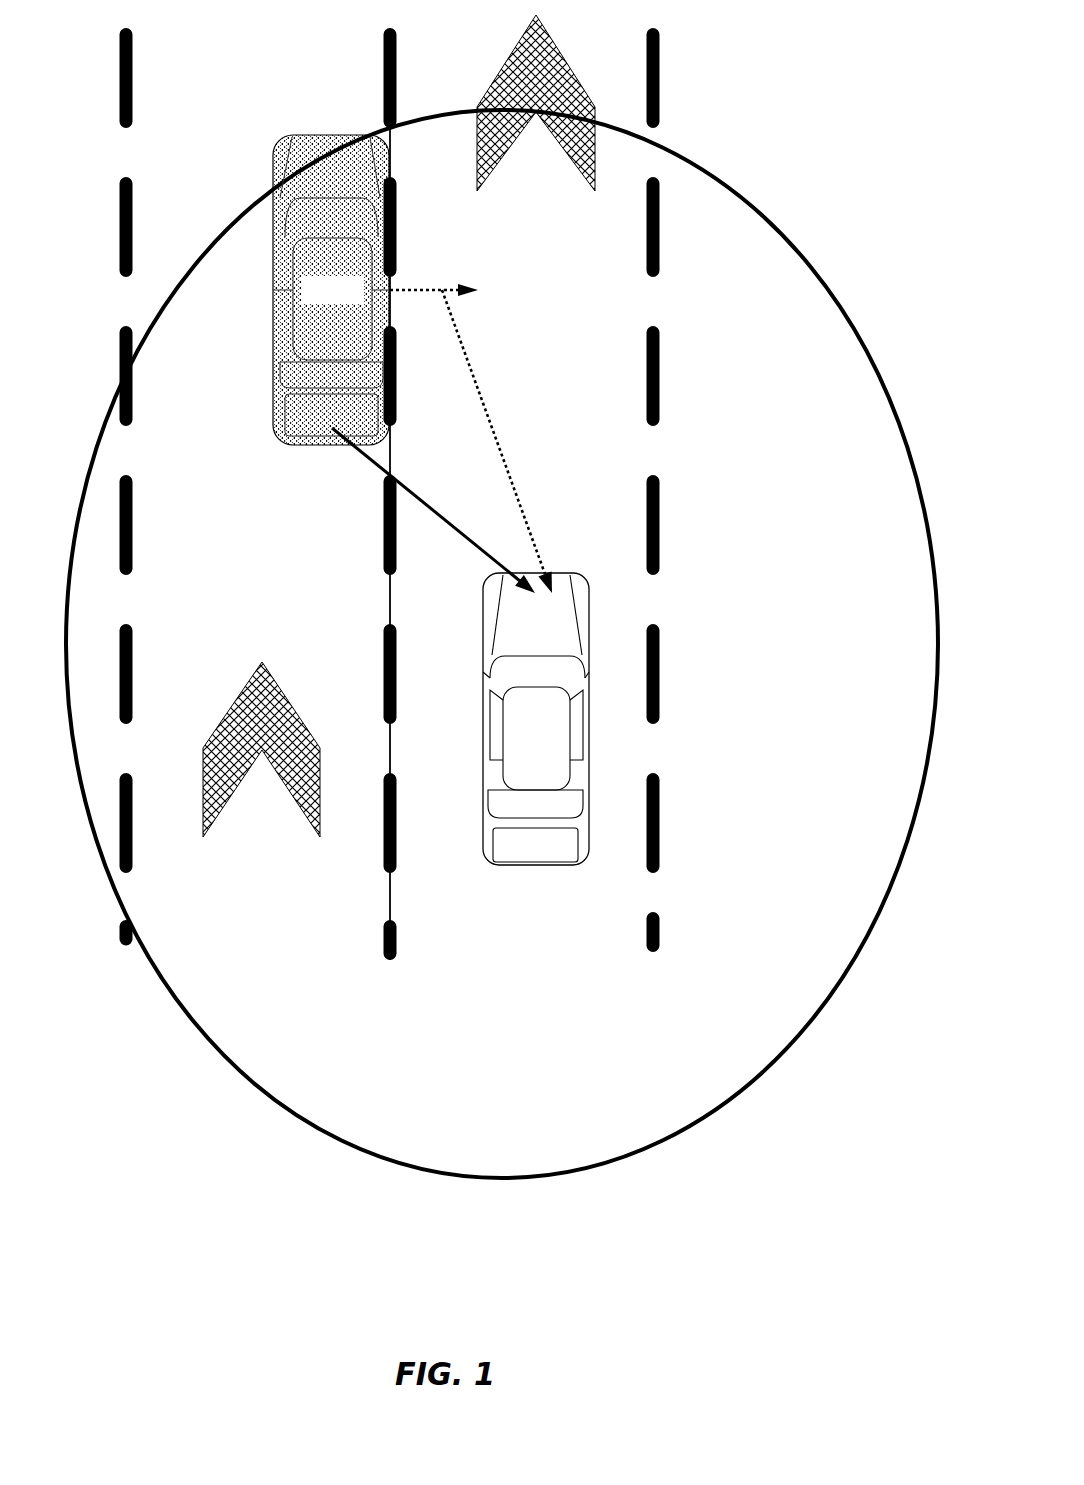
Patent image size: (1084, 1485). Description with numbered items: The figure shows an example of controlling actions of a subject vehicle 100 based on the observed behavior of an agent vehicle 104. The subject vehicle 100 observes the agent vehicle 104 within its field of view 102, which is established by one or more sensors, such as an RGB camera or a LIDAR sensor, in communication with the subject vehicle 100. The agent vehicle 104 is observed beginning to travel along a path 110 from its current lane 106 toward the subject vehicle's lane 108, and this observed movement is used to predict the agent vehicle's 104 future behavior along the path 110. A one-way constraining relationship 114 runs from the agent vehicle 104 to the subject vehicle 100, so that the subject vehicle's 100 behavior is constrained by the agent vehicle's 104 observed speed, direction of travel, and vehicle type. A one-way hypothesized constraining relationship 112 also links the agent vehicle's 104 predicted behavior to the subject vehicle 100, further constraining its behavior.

The subject vehicle 100 is at (554, 734).
The field of view 102 is at (843, 312).
The agent vehicle 104 is at (350, 302).
The current lane 106 is at (223, 497).
The subject vehicle's lane 108 is at (565, 486).
The path 110 is at (420, 290).
The one-way hypothesized constraining relationship 112 is at (515, 488).
The one-way constraining relationship 114 is at (481, 555).